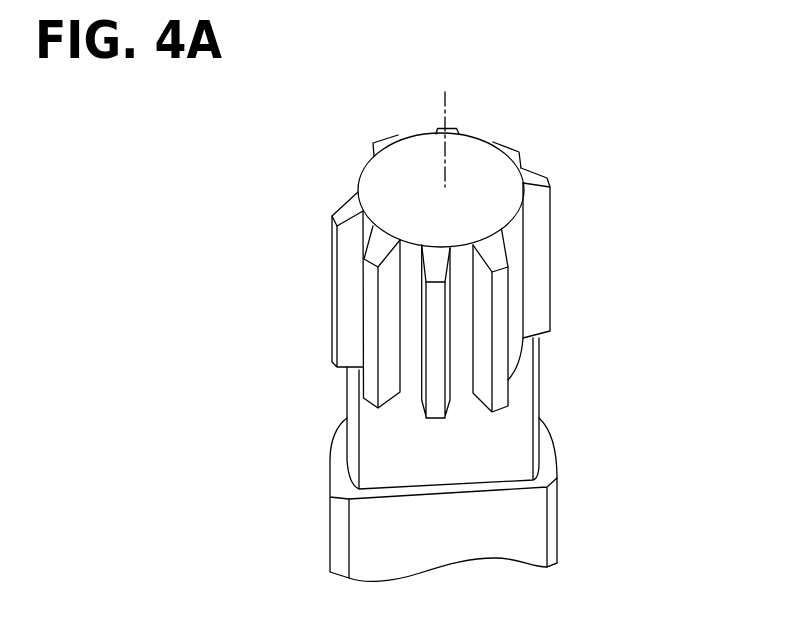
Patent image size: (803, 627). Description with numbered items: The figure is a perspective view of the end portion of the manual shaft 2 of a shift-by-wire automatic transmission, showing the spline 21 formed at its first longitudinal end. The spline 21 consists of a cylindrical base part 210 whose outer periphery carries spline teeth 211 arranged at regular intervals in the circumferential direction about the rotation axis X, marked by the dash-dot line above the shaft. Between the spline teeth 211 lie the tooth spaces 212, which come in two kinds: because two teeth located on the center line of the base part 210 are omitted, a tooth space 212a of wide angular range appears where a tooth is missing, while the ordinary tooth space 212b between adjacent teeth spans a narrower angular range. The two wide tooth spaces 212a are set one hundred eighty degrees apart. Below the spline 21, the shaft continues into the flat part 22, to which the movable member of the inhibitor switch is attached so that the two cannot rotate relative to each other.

The manual shaft 2 is at (580, 522).
The spline 21 is at (332, 267).
The cylindrical base part 210 is at (483, 167).
The spline teeth 211 is at (541, 181).
The tooth space 212 is at (661, 202).
The tooth space (tooth-omitted part) 212a is at (364, 162).
The tooth space 212b is at (463, 290).
The flat part 22 is at (362, 540).